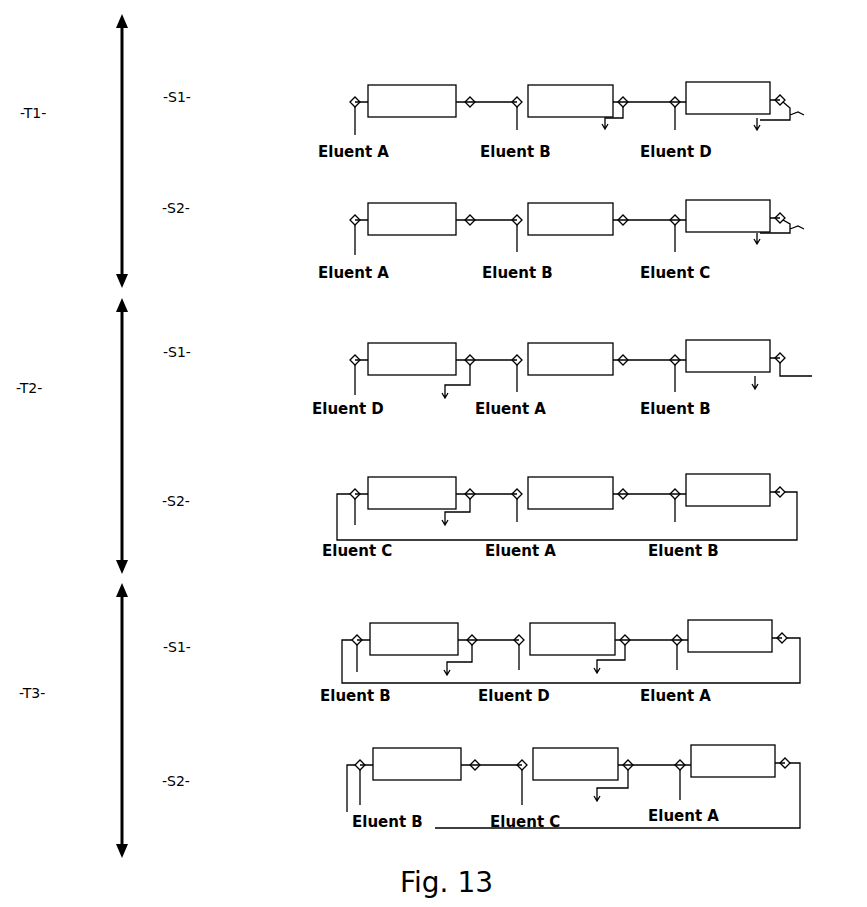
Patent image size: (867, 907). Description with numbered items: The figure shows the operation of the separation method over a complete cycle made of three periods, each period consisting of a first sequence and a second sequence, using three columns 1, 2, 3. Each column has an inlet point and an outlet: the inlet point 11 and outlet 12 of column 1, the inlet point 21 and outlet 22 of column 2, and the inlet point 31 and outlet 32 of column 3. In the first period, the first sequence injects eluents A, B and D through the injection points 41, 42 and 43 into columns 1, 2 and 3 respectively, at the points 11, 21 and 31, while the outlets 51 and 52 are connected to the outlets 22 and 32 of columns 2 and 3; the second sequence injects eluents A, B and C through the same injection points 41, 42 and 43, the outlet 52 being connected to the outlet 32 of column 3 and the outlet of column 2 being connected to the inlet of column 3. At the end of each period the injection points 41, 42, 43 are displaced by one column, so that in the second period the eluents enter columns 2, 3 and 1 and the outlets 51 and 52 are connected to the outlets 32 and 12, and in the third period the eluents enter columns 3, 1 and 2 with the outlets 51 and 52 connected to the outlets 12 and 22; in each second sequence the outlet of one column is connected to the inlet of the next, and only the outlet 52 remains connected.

The column 1 is at (410, 100).
The column 2 is at (568, 99).
The column 3 is at (730, 97).
The inlet point of column 1 11 is at (354, 103).
The outlet of column 1 12 is at (470, 98).
The inlet point of column 2 21 is at (517, 97).
The outlet of column 2 22 is at (622, 96).
The inlet point of column 3 31 is at (675, 97).
The outlet of column 3 32 is at (778, 93).
The injection point 41 is at (353, 128).
The injection point 42 is at (517, 122).
The injection point 43 is at (673, 126).
The outlet 51 is at (607, 128).
The outlet 52 is at (804, 115).